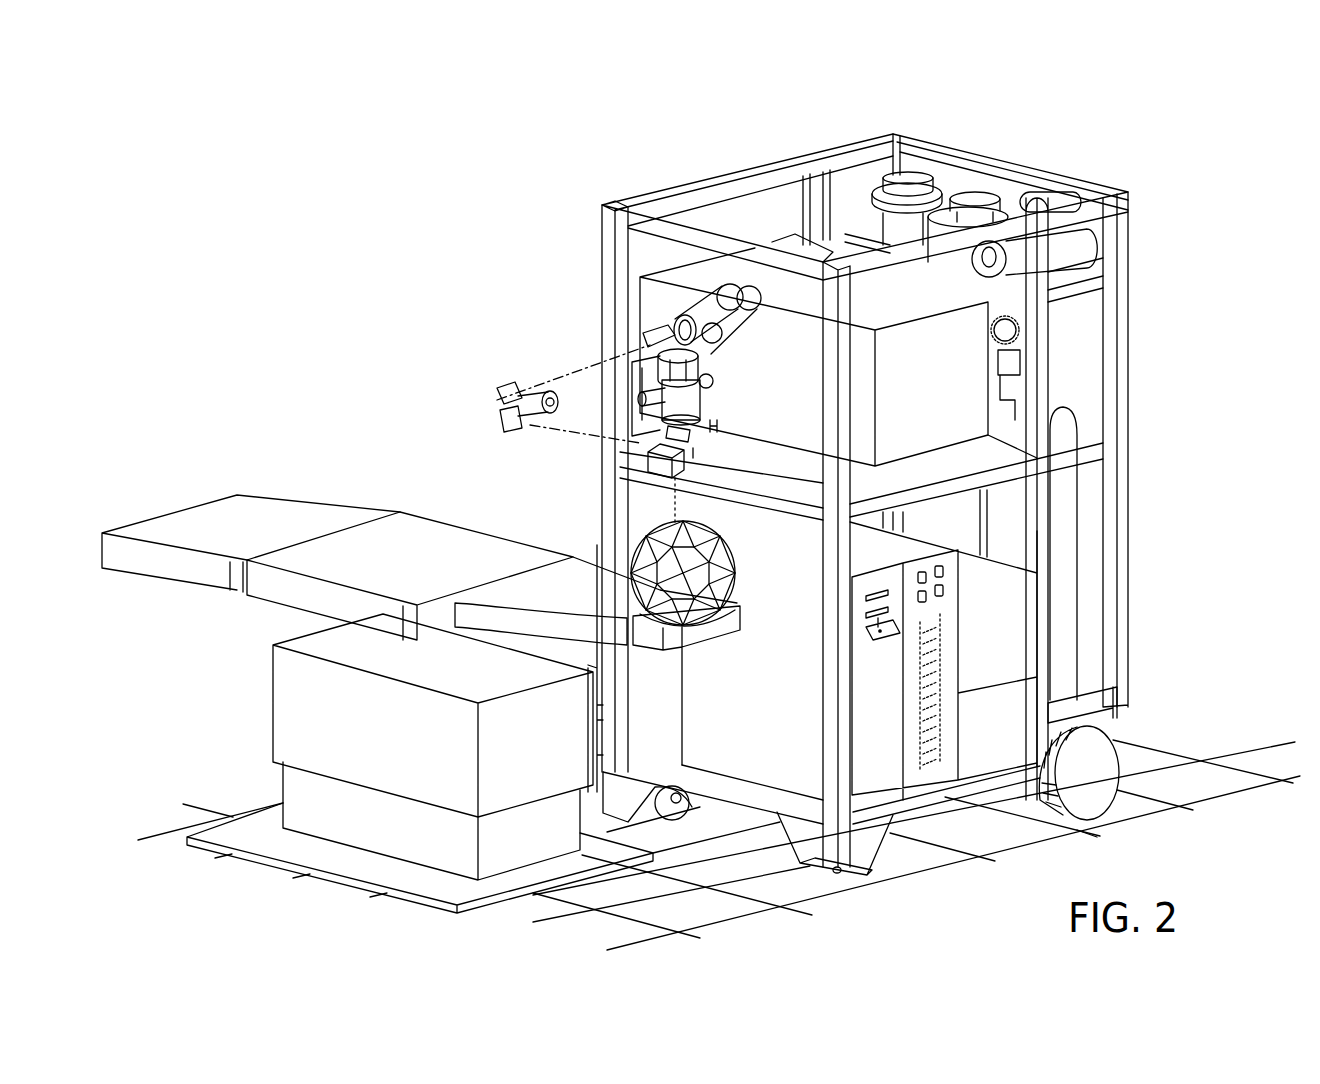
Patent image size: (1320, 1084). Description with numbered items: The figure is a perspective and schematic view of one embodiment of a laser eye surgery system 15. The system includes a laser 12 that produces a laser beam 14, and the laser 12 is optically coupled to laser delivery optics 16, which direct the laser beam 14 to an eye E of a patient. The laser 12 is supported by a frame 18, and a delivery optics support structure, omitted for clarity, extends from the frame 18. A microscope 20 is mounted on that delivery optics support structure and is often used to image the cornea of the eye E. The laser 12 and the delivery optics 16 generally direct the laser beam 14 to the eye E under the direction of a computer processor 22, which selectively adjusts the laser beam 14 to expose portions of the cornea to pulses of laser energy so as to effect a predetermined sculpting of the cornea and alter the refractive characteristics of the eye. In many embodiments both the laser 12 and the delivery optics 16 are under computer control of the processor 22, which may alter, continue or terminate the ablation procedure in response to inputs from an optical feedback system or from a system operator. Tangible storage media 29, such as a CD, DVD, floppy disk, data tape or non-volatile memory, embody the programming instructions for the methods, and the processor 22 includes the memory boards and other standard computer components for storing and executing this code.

The laser eye surgery system 15 is at (338, 137).
The laser 12 is at (1150, 327).
The frame 18 is at (722, 187).
The microscope 20 is at (705, 353).
The laser beam 14 is at (690, 497).
The laser delivery optics 16 is at (518, 432).
The eye E is at (660, 518).
The tangible storage media 29 is at (882, 641).
The computer processor 22 is at (959, 818).